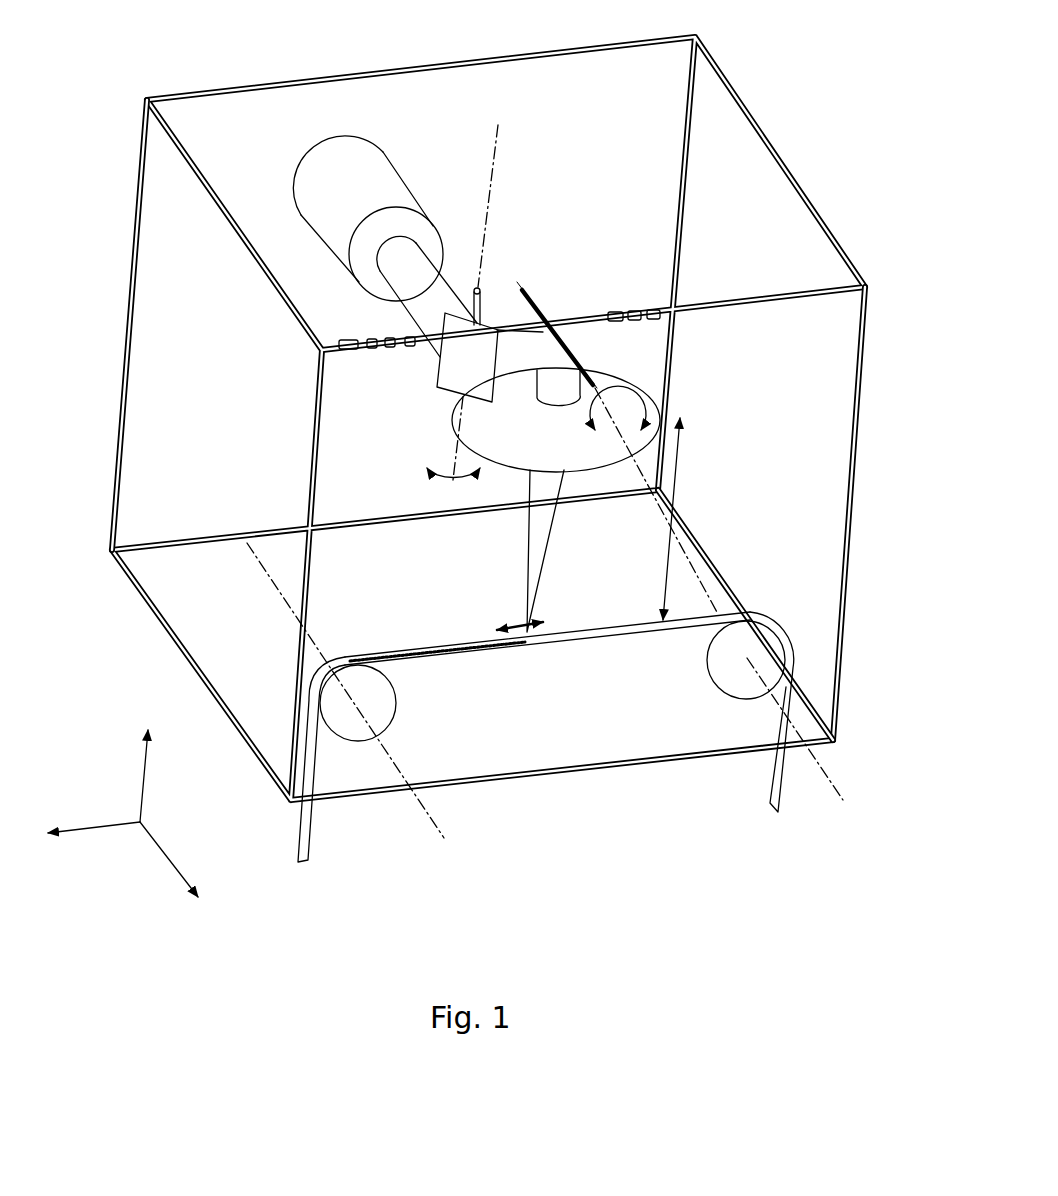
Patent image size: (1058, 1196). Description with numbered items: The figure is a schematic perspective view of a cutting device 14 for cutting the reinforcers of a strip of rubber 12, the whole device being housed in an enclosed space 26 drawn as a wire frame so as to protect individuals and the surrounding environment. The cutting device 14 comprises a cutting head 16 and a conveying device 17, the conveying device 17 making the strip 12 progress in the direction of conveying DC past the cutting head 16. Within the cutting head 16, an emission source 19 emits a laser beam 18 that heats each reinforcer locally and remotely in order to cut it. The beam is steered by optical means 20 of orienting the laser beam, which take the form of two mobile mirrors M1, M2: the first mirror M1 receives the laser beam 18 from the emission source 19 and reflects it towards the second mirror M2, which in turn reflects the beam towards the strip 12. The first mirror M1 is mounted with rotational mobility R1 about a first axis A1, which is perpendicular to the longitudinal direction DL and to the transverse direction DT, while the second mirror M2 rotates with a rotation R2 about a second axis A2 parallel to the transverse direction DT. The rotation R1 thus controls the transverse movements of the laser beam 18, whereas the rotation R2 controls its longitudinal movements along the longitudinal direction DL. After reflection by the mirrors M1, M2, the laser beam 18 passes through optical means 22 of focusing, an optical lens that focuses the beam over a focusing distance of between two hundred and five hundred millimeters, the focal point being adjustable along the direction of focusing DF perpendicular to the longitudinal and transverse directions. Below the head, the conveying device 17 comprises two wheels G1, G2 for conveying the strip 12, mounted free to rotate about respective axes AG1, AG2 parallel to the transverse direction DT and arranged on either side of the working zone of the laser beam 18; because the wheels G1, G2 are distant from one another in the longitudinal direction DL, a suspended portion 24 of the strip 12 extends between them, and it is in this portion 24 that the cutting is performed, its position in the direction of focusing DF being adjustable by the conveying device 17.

The strip of rubber 12 is at (576, 697).
The cutting device 14 is at (502, 411).
The cutting head 16 is at (175, 353).
The conveying device 17 is at (882, 577).
The laser beam 18 is at (423, 311).
The emission source 19 is at (386, 179).
The optical means of orienting the laser beam 20 is at (550, 378).
The optical means of focusing the laser beam 22 is at (648, 381).
The portion of the strip 24 is at (702, 680).
The enclosed space 26 is at (862, 370).
The first mirror M1 is at (453, 381).
The second mirror M2 is at (570, 347).
The first axis A1 is at (460, 440).
The second axis A2 is at (540, 297).
The rotation of the first mirror R1 is at (434, 483).
The rotation of the second mirror R2 is at (600, 422).
The first conveying wheel G1 is at (733, 680).
The second conveying wheel G2 is at (352, 727).
The axis of the first wheel AG1 is at (828, 778).
The axis of the second wheel AG2 is at (448, 828).
The direction of focusing DF is at (425, 620).
The direction of conveying DC is at (533, 628).
The longitudinal direction DL is at (94, 816).
The transverse direction DT is at (174, 859).